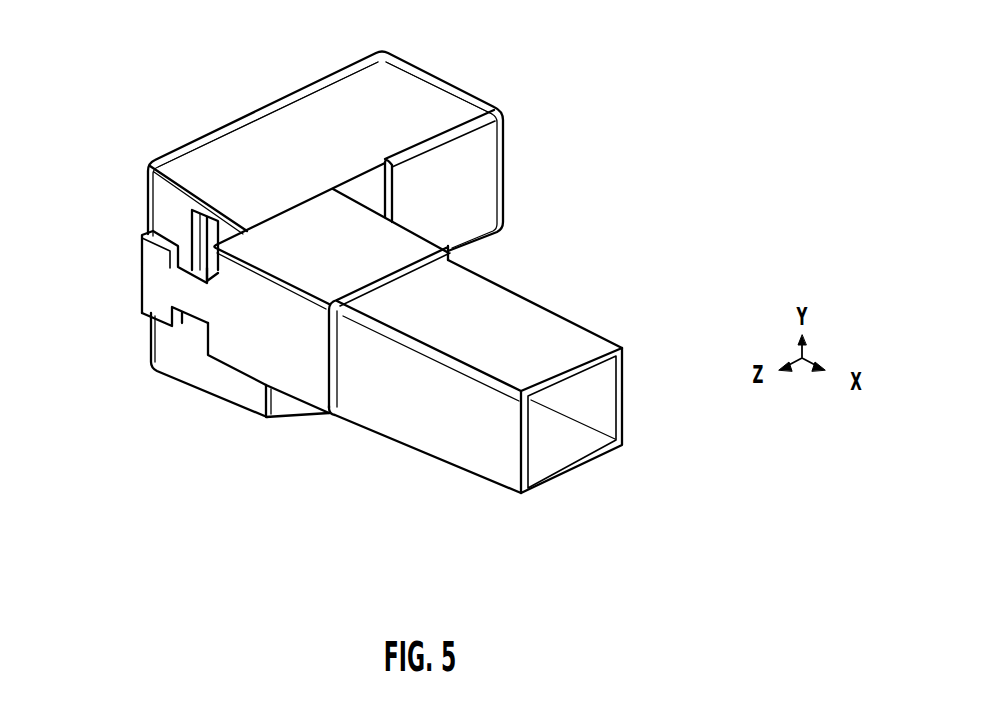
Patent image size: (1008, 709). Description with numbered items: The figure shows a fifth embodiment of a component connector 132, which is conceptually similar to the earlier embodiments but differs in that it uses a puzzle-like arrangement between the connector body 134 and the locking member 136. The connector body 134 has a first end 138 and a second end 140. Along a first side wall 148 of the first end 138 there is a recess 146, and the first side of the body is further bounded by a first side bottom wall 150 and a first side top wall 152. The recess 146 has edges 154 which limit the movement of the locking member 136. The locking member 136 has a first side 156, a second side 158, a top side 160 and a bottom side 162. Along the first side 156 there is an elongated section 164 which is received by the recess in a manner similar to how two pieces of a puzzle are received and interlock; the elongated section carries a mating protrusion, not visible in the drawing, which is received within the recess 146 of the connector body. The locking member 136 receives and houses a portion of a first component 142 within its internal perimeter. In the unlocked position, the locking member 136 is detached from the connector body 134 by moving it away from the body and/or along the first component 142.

The component connector 132 is at (619, 98).
The connector body 134 is at (473, 193).
The locking member 136 is at (320, 373).
The connector body first end 138 is at (285, 395).
The connector body second end 140 is at (458, 100).
The first component 142 is at (543, 420).
The connector body recess 146 is at (193, 248).
The connector body first side wall 148 is at (177, 343).
The connector body first side bottom wall 150 is at (216, 395).
The connector body first side top wall 152 is at (240, 168).
The recess edges 154 is at (220, 240).
The locking member first side 156 is at (228, 326).
The locking member second side 158 is at (455, 256).
The locking member top side 160 is at (400, 240).
The locking member bottom side 162 is at (336, 424).
The elongated section 164 is at (163, 269).